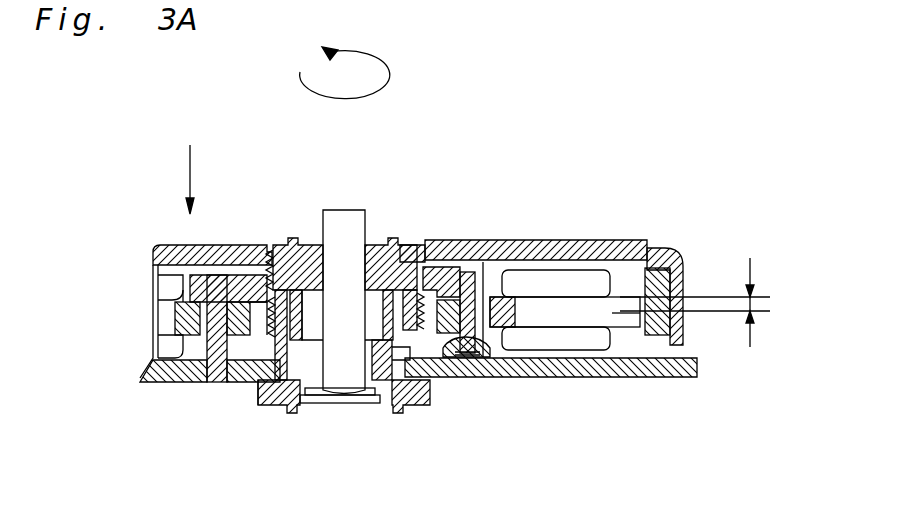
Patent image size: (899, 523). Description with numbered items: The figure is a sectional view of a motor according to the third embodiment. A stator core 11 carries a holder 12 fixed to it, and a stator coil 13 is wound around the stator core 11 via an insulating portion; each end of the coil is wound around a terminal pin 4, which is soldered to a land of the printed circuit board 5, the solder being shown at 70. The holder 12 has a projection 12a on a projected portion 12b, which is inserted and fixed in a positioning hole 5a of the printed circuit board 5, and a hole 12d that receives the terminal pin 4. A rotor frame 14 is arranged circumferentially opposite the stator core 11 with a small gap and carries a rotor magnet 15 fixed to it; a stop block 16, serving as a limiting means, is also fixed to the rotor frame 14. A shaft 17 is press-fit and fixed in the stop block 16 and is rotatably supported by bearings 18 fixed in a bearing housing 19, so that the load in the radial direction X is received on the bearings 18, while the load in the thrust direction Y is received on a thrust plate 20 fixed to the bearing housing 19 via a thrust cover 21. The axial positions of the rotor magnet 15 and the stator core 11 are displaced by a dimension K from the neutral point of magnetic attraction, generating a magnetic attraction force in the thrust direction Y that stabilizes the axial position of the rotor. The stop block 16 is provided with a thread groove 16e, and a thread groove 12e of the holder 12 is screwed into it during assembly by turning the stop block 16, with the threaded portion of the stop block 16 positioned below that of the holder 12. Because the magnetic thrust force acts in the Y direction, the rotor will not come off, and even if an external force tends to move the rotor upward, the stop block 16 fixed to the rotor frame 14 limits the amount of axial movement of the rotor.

The terminal pin 4 is at (470, 352).
The printed circuit board 5 is at (547, 366).
The positioning hole 5a is at (177, 381).
The stator core 11 is at (613, 318).
The holder 12 is at (458, 262).
The projection 12a is at (221, 382).
The projected portion 12b is at (208, 316).
The hole 12d is at (508, 247).
The thread groove 12e is at (440, 247).
The stator coil 13 is at (555, 282).
The rotor frame 14 is at (663, 253).
The rotor magnet 15 is at (670, 268).
The stop block 16 is at (383, 243).
The thread groove 16e is at (260, 365).
The shaft 17 is at (313, 220).
The bearings 18 is at (272, 250).
The bearing housing 19 is at (295, 383).
The thrust plate 20 is at (375, 403).
The thrust cover 21 is at (333, 403).
The solder 70 is at (445, 352).
The radial direction X is at (345, 62).
The thrust direction Y is at (187, 163).
The dimension K is at (705, 302).